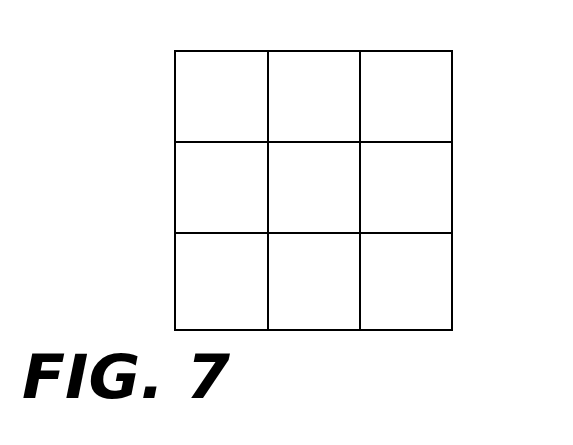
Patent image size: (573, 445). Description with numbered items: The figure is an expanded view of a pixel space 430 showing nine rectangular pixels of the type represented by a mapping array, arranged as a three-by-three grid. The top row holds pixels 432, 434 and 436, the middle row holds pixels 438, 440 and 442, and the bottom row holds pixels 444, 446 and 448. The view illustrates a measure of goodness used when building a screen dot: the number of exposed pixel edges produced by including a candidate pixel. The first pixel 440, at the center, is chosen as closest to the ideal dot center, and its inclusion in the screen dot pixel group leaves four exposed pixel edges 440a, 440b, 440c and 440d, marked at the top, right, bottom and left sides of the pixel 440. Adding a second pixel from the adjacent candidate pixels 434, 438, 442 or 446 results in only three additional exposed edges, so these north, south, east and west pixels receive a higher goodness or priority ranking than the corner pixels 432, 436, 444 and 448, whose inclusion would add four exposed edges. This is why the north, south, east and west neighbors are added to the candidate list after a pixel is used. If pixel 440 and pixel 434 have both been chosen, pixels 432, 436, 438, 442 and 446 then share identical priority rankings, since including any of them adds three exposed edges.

The pixel space 430 is at (438, 39).
The pixel 432 is at (221, 96).
The adjacent candidate pixel 434 is at (314, 96).
The pixel 436 is at (406, 96).
The adjacent candidate pixel 438 is at (221, 187).
The first pixel 440 is at (314, 187).
The adjacent candidate pixel 442 is at (406, 187).
The pixel 444 is at (221, 281).
The adjacent candidate pixel 446 is at (314, 281).
The pixel 448 is at (406, 281).
The exposed pixel edge 440a is at (334, 134).
The exposed pixel edge 440b is at (368, 172).
The exposed pixel edge 440c is at (338, 242).
The exposed pixel edge 440d is at (260, 165).